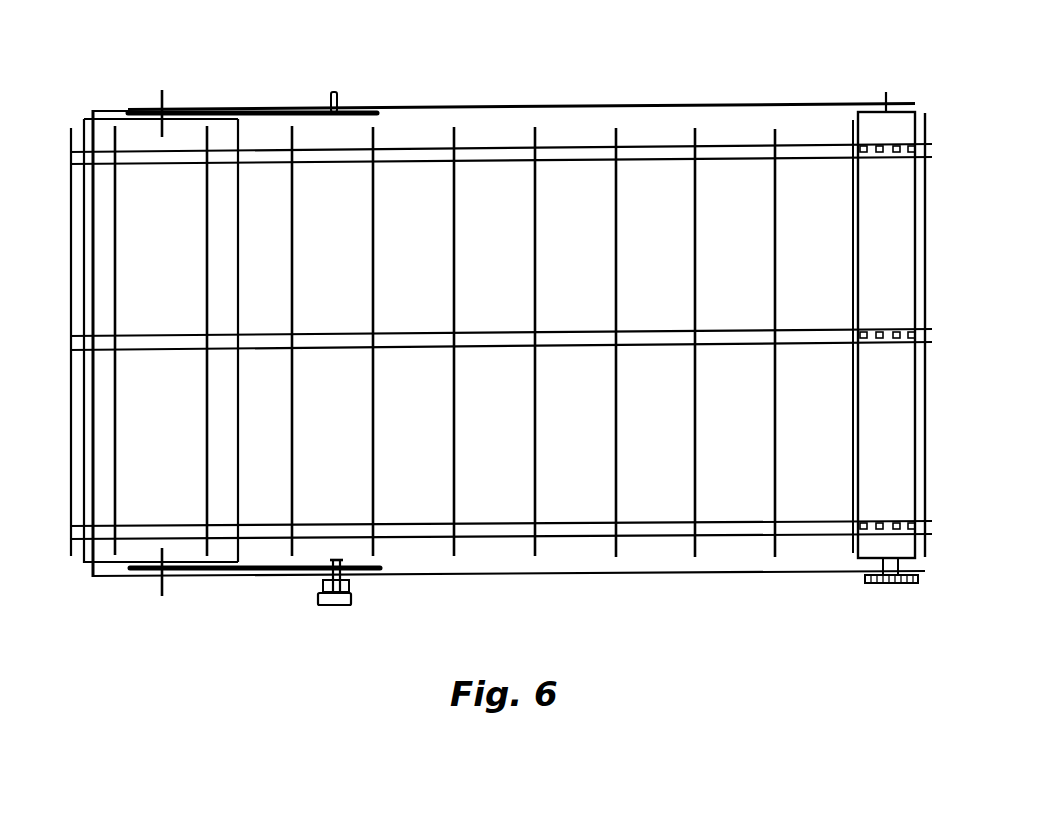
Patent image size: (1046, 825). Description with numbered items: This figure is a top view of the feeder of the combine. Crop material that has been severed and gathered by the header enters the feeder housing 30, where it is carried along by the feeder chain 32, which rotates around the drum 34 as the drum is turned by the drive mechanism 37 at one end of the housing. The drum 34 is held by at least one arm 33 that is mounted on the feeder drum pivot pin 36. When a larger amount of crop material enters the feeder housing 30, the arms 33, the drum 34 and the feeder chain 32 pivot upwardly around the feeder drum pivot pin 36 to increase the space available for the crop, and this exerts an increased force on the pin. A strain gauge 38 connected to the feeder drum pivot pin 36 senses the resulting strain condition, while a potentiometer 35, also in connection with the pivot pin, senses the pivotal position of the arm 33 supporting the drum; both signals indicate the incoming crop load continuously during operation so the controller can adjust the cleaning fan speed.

The feeder housing 30 is at (728, 104).
The feeder chain 32 is at (488, 332).
The arm 33 is at (247, 112).
The drum 34 is at (105, 550).
The potentiometer 35 is at (327, 606).
The feeder drum pivot pin 36 is at (322, 589).
The drive mechanism 37 is at (877, 127).
The strain gauge 38 is at (350, 583).